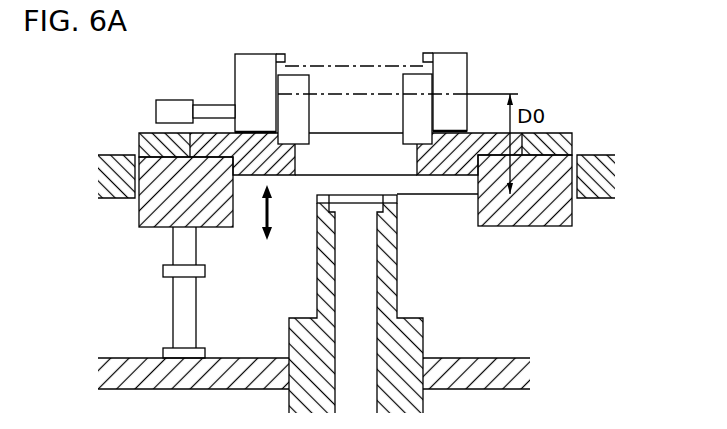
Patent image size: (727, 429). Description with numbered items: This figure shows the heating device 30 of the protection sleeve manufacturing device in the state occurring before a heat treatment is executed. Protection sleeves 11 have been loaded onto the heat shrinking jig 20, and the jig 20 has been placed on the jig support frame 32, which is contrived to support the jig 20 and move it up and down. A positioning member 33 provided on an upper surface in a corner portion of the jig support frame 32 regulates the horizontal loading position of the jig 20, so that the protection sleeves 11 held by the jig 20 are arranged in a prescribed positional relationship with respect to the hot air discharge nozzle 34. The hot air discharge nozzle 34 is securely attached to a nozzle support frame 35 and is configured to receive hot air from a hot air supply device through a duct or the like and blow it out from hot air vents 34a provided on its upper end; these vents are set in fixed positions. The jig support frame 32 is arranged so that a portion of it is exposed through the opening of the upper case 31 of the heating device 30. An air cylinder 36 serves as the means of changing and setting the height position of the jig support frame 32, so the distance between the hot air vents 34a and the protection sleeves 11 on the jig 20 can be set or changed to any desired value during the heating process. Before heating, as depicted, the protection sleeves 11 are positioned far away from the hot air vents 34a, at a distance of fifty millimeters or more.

The protection sleeve 11 is at (356, 64).
The jig 20 is at (480, 81).
The heating device 30 is at (578, 280).
The upper case 31 is at (590, 160).
The jig support frame 32 is at (533, 228).
The positioning member 33 is at (548, 140).
The hot air discharge nozzle 34 is at (317, 303).
The hot air vents 34a is at (339, 200).
The nozzle support frame 35 is at (447, 367).
The air cylinder 36 is at (163, 270).